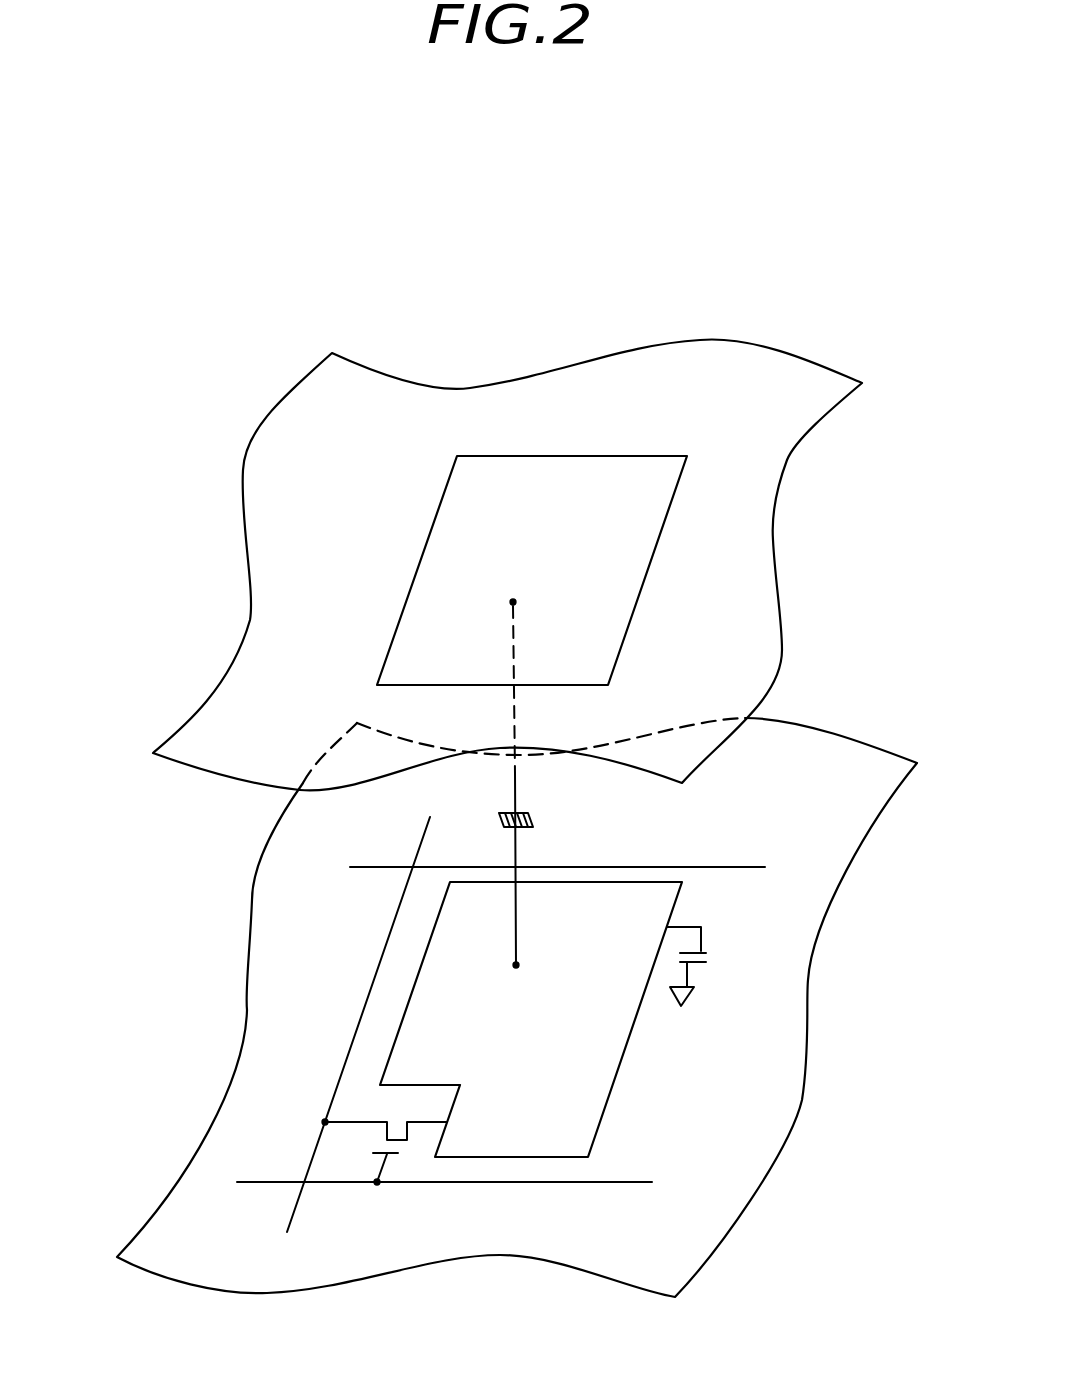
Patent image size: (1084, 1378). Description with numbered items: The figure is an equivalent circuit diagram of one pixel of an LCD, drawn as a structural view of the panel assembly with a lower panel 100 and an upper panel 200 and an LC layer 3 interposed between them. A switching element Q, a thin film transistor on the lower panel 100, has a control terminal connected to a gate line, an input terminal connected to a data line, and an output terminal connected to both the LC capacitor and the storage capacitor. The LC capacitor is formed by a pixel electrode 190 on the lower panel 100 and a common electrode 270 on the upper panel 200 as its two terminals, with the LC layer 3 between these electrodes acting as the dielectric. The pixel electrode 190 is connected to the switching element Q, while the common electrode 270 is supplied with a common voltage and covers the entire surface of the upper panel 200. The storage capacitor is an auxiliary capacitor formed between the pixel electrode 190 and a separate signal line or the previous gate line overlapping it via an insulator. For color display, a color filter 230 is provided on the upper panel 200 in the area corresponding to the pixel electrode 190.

The LC layer 3 is at (153, 885).
The lower panel 100 is at (815, 980).
The pixel electrode 190 is at (615, 1082).
The upper panel 200 is at (787, 598).
The color filter 230 is at (647, 587).
The common electrode 270 is at (774, 530).